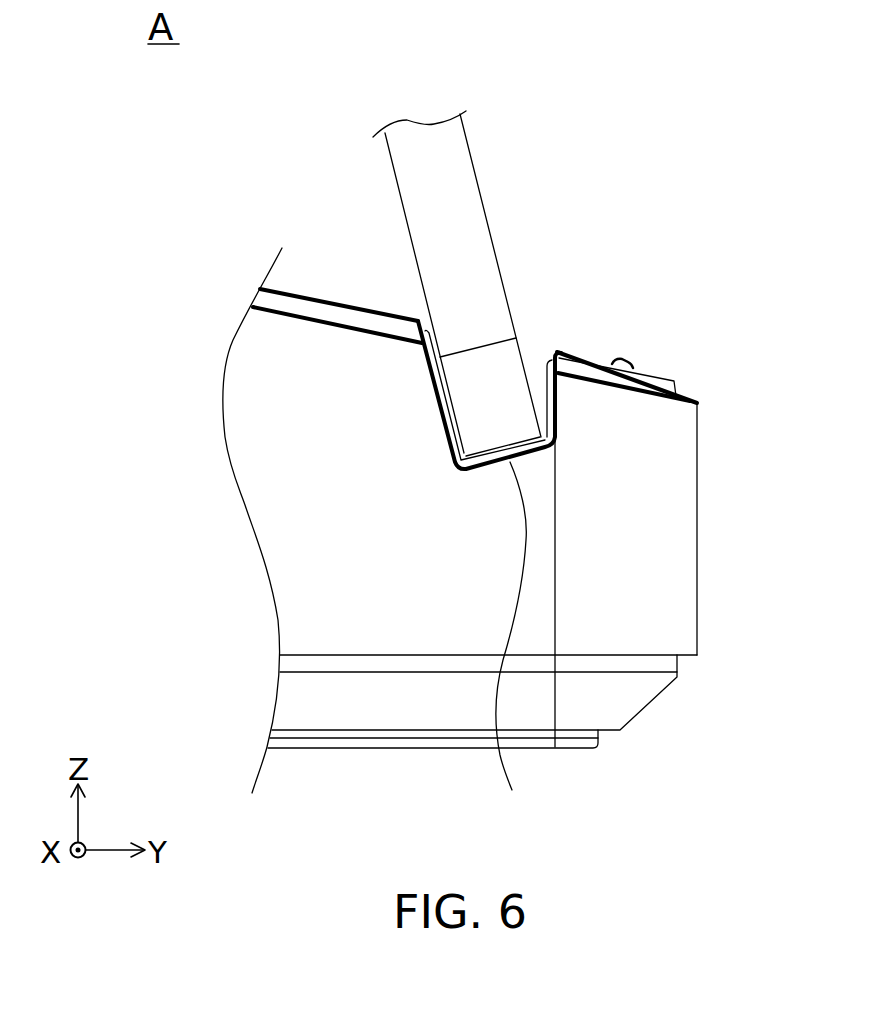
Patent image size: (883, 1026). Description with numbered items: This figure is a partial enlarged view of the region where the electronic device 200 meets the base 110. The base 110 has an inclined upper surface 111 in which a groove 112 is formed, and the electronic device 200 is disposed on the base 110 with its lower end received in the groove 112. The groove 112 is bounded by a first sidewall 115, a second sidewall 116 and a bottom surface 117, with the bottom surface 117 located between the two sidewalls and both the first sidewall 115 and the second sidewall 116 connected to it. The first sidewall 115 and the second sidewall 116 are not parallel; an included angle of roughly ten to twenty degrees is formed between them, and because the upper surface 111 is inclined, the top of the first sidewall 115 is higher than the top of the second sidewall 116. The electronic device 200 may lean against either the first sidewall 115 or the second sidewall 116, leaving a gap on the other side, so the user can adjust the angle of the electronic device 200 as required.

The base 110 is at (713, 530).
The upper surface 111 is at (343, 300).
The groove 112 is at (533, 343).
The first sidewall 115 is at (440, 403).
The second sidewall 116 is at (557, 408).
The bottom surface 117 is at (510, 645).
The electronic device 200 is at (457, 207).